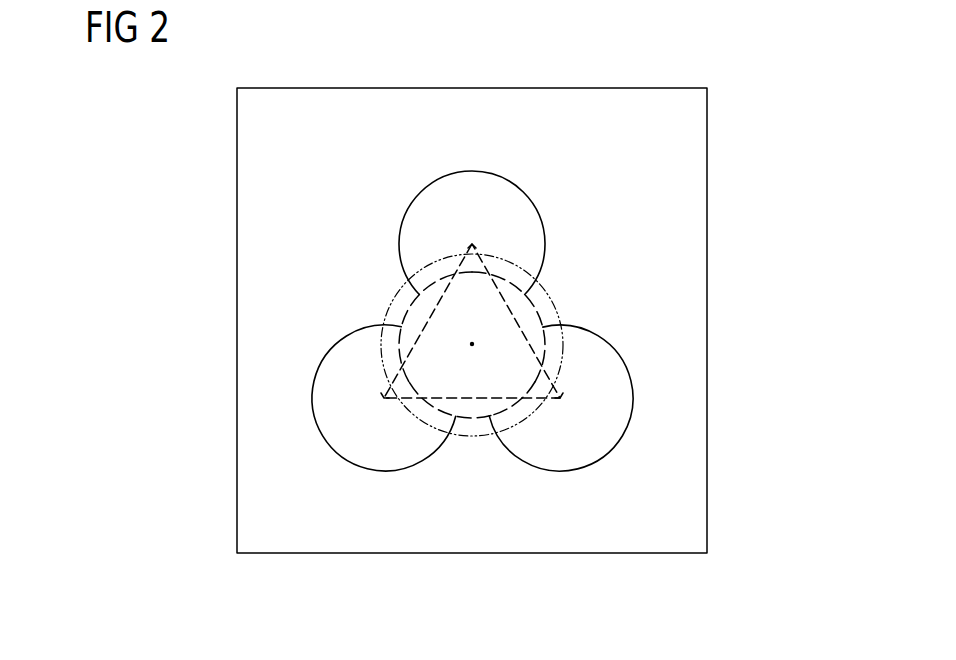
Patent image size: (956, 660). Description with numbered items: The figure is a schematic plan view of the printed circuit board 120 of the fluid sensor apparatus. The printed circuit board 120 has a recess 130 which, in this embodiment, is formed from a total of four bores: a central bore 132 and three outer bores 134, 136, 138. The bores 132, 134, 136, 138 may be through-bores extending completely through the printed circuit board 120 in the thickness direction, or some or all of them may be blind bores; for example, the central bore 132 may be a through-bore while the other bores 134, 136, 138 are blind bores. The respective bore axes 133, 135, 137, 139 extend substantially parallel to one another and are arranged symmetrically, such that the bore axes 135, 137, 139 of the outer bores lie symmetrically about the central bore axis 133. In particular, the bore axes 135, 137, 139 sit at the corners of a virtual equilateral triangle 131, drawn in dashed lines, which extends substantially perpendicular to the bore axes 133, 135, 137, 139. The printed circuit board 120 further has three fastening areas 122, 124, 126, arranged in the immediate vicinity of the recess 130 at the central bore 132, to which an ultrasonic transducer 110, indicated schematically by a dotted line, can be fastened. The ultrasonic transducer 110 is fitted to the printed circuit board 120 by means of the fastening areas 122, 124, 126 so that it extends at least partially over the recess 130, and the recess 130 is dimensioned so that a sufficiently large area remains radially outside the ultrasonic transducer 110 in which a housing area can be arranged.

The ultrasonic transducer 110 is at (546, 288).
The printed circuit board 120 is at (292, 122).
The fastening area 122 is at (400, 317).
The fastening area 124 is at (548, 317).
The fastening area 126 is at (460, 422).
The recess 130 is at (560, 183).
The virtual equilateral triangle 131 is at (497, 400).
The central bore 132 is at (513, 405).
The central bore axis 133 is at (472, 345).
The bore 134 is at (413, 198).
The bore axis 135 is at (473, 243).
The bore 136 is at (620, 358).
The bore axis 137 is at (560, 398).
The bore 138 is at (319, 356).
The bore axis 139 is at (383, 399).